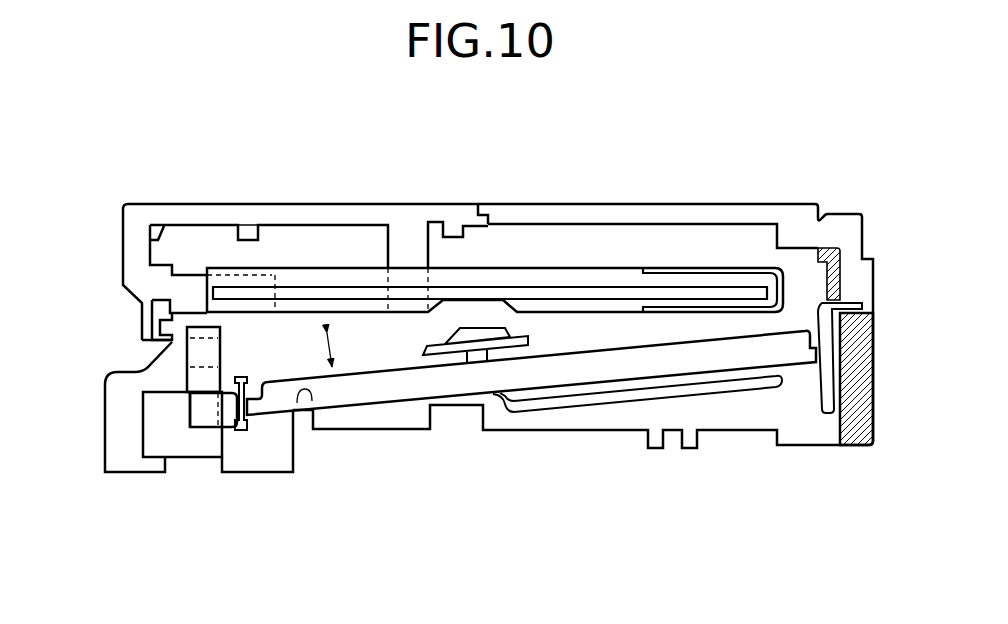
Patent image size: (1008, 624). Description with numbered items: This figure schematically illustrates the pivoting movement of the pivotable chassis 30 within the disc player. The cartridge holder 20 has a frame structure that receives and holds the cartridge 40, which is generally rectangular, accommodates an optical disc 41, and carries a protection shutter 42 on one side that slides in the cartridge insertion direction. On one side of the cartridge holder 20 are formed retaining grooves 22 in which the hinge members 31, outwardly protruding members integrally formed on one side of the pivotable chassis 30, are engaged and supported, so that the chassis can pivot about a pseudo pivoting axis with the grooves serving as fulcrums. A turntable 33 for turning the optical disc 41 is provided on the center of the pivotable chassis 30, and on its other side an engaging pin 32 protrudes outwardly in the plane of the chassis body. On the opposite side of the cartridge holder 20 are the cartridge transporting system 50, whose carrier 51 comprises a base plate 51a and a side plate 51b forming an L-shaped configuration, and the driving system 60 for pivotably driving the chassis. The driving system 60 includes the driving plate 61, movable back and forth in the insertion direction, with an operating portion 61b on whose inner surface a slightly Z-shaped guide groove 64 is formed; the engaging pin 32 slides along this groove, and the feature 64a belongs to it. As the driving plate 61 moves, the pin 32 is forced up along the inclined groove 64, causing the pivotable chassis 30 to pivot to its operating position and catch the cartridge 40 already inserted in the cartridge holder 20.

The cartridge holder 20 is at (704, 209).
The retaining grooves 22 is at (879, 311).
The pivotable chassis 30 is at (367, 389).
The hinge members 31 is at (866, 305).
The engaging pin 32 is at (190, 412).
The turntable 33 is at (461, 328).
The cartridge 40 is at (538, 268).
The optical disc 41 is at (567, 290).
The protection shutter 42 is at (686, 270).
The cartridge transporting system 50 is at (260, 190).
The carrier 51 is at (188, 207).
The base plate 51a is at (358, 212).
The side plate 51b is at (123, 237).
The driving system 60 is at (104, 409).
The driving plate 61 is at (178, 440).
The operating portion 61b is at (231, 436).
The guide groove 64 is at (212, 378).
The guide portion 64a is at (210, 350).